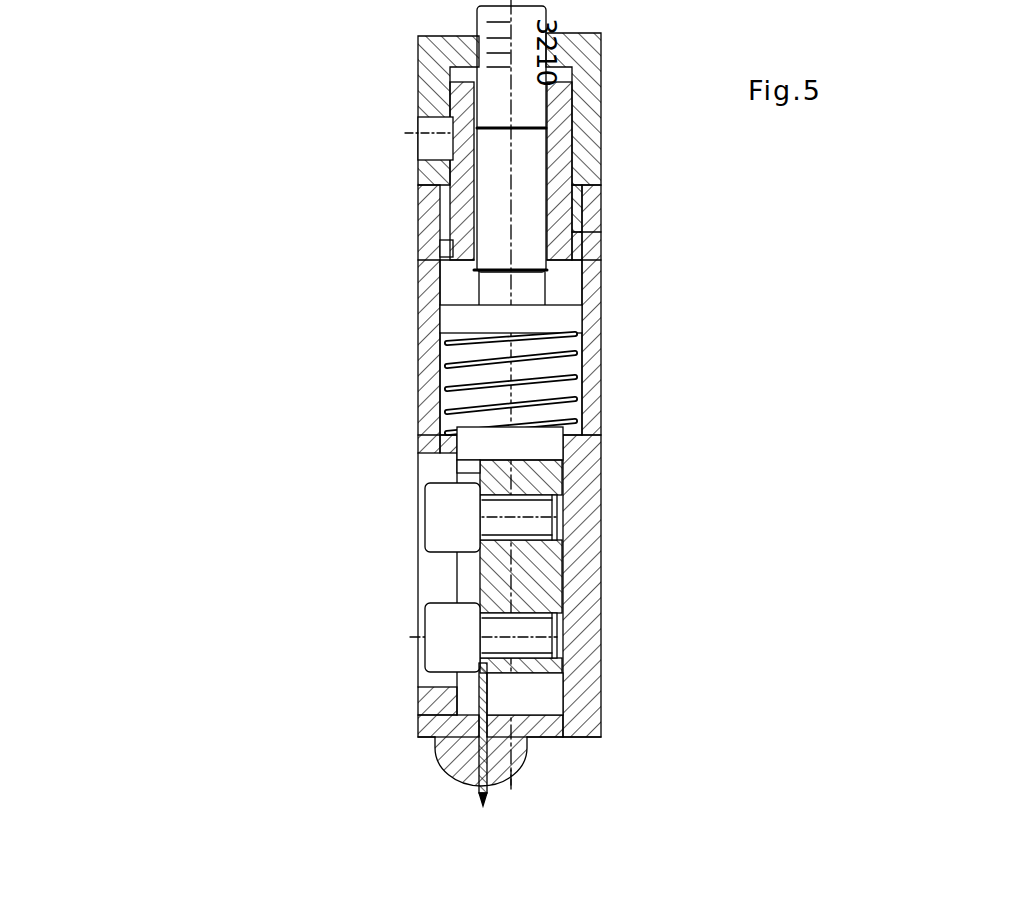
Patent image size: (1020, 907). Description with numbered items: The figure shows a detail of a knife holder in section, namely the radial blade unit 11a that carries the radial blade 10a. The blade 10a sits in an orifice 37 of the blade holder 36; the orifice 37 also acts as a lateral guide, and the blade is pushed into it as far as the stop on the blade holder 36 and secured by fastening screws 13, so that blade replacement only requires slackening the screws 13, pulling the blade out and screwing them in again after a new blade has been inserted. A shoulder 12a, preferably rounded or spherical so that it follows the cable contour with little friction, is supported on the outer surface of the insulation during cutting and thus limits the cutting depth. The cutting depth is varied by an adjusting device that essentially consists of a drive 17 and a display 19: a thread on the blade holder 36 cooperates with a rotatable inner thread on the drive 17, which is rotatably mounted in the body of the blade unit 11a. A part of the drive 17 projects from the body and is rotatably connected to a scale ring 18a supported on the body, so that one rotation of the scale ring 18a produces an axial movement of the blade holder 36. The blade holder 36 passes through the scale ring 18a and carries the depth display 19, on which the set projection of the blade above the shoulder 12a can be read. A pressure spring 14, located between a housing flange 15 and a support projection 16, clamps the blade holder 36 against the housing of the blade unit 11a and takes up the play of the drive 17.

The radial blade 10a is at (480, 792).
The depth display 19 is at (475, 17).
The scale ring 18a is at (440, 143).
The drive 17 is at (458, 250).
The support projection 16 is at (475, 319).
The pressure spring 14 is at (472, 408).
The housing flange 15 is at (567, 438).
The blade holder 36 is at (533, 571).
The fastening screws 13 is at (455, 643).
The radial blade unit 11a is at (507, 738).
The shoulder 12a is at (514, 770).
The orifice 37 is at (486, 733).